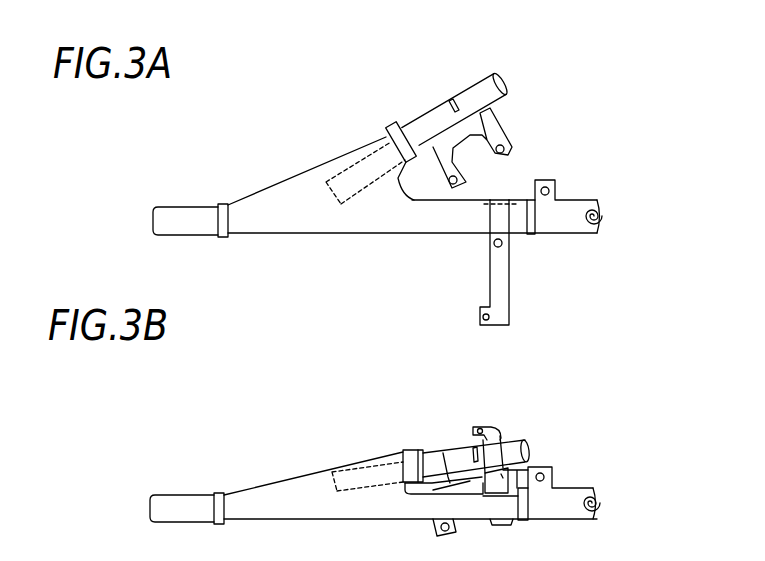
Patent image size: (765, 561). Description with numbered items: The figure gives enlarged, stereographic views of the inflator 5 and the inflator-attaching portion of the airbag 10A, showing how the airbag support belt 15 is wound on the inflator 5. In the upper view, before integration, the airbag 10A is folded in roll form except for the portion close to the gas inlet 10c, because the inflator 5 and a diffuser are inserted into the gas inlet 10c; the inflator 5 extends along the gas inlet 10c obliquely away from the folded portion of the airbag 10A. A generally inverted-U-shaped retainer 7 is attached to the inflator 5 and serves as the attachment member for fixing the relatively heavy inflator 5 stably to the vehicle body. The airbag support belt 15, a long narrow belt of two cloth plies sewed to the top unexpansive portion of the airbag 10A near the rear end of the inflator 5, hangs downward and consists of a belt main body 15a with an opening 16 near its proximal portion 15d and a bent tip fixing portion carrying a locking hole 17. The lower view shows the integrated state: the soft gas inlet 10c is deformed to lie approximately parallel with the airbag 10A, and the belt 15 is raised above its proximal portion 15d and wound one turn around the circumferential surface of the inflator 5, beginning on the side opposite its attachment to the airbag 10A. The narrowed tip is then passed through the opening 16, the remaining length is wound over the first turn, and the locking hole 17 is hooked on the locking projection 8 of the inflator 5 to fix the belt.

In FIG. 3A, the inflator 5 is at (466, 90).
In FIG. 3B, the inflator 5 is at (520, 436).
In FIG. 3A, the retainer 7 is at (503, 140).
In FIG. 3B, the retainer 7 is at (440, 452).
In FIG. 3A, the locking projection 8 is at (452, 104).
In FIG. 3A, the airbag 10A is at (570, 200).
In FIG. 3B, the airbag 10A is at (572, 487).
In FIG. 3A, the gas inlet 10c is at (394, 130).
In FIG. 3B, the gas inlet 10c is at (373, 455).
In FIG. 3A, the airbag support belt 15 is at (507, 247).
In FIG. 3B, the airbag support belt 15 is at (523, 436).
In FIG. 3A, the belt main body 15a is at (501, 267).
In FIG. 3A, the proximal portion 15d is at (492, 202).
In FIG. 3A, the opening 16 is at (492, 243).
In FIG. 3B, the opening 16 is at (503, 476).
In FIG. 3A, the locking hole 17 is at (483, 317).
In FIG. 3B, the locking hole 17 is at (480, 426).